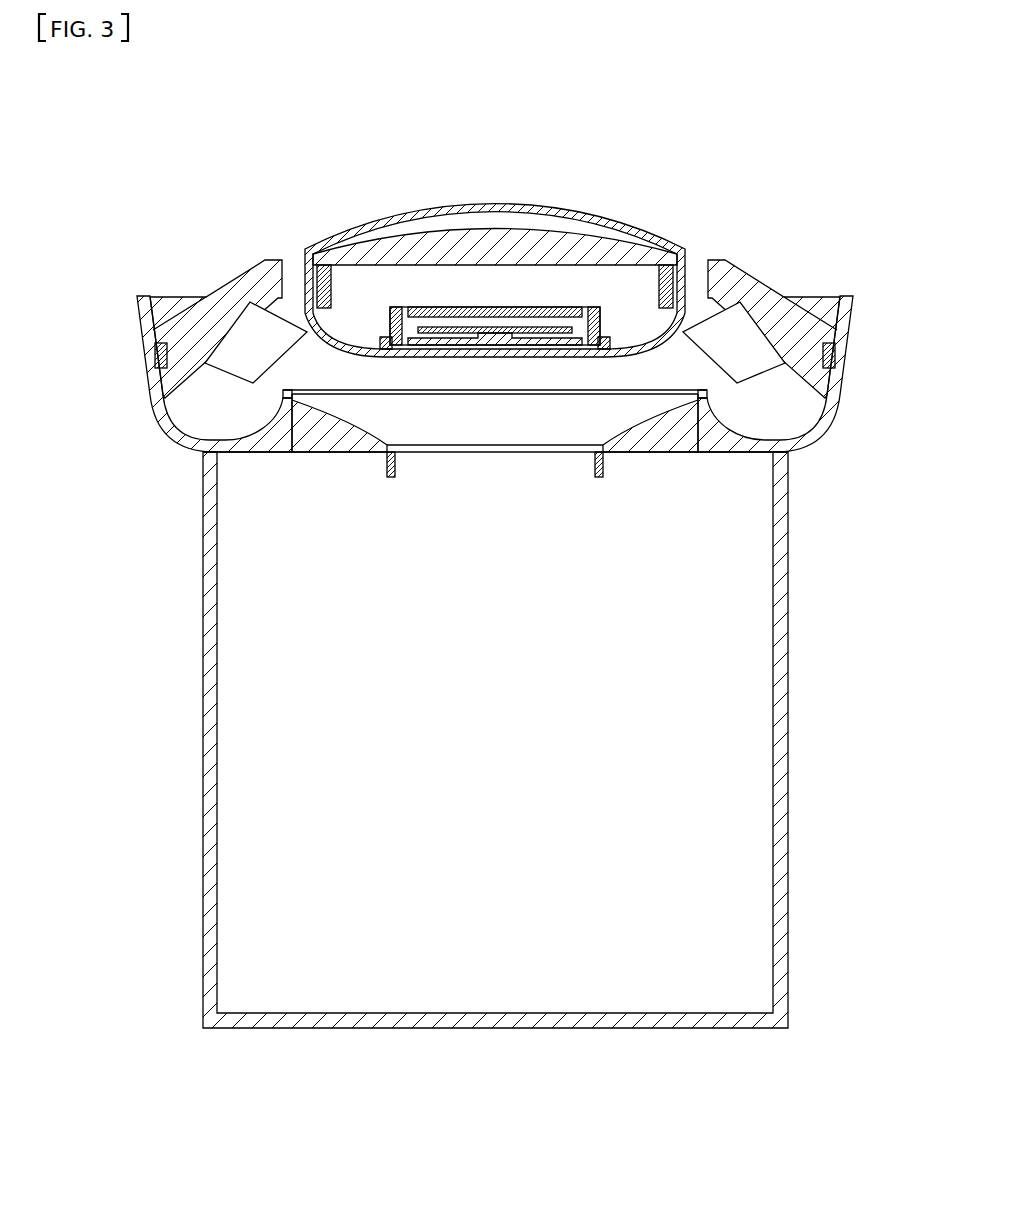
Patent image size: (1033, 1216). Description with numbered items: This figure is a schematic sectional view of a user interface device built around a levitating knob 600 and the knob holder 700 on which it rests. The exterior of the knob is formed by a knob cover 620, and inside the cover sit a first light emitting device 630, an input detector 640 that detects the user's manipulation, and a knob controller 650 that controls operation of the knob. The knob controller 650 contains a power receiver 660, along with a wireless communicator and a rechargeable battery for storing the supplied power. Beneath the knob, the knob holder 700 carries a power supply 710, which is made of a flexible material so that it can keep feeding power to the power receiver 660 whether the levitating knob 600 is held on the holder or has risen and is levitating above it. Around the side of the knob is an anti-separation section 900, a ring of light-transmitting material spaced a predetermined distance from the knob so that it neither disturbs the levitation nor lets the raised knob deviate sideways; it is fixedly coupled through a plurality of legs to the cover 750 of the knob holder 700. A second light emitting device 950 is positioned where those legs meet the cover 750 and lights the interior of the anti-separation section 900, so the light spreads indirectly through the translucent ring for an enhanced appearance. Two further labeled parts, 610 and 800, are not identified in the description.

The levitating knob 600 is at (495, 266).
The sensor board 610 is at (539, 334).
The knob cover 620 is at (511, 204).
The first light emitting device 630 is at (667, 264).
The input detector 640 is at (684, 249).
The knob controller 650 is at (495, 301).
The power receiver 660 is at (597, 306).
The knob holder 700 is at (327, 448).
The power supply 710 is at (600, 478).
The cover 750 is at (146, 323).
The container 800 is at (786, 774).
The anti-separation section 900 is at (724, 262).
The second light emitting device 950 is at (833, 356).